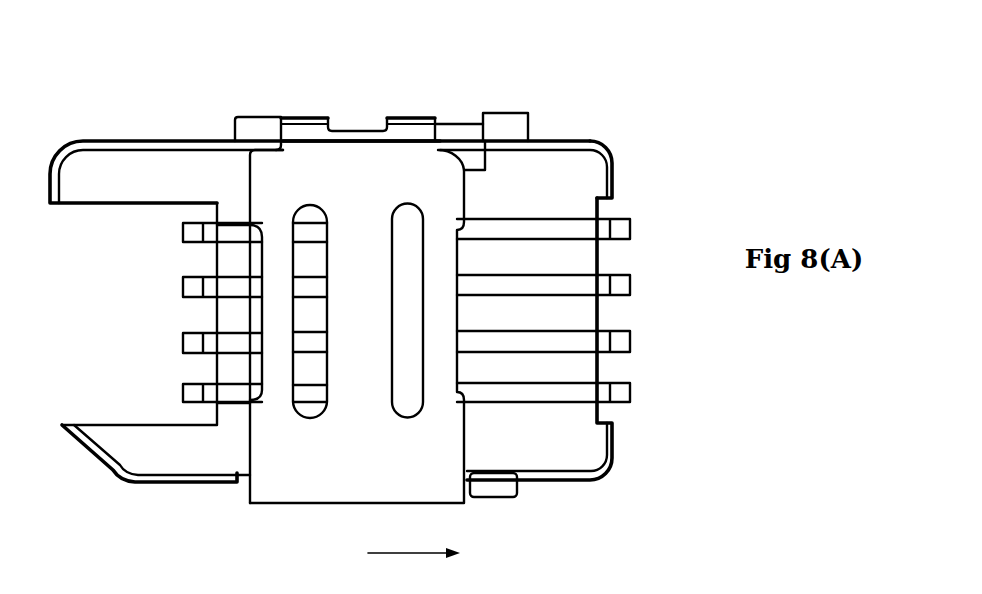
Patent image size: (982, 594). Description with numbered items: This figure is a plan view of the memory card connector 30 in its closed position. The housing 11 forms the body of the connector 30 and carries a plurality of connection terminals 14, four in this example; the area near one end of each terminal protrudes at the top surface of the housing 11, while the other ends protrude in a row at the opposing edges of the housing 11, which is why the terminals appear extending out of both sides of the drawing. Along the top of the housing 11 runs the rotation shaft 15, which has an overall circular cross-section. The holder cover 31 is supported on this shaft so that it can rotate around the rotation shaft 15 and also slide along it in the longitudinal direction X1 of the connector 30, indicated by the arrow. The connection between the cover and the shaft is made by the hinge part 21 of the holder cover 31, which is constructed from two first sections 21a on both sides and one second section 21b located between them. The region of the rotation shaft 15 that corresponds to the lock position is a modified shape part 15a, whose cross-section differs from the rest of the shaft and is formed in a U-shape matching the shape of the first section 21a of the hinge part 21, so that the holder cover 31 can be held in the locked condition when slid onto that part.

The connector 30 is at (597, 102).
The housing 11 is at (157, 141).
The holder cover 31 is at (322, 504).
The connection terminals 14 is at (183, 393).
The hinge part 21 is at (310, 118).
The first section 21a is at (292, 114).
The second section 21b is at (354, 121).
The rotation shaft 15 is at (370, 137).
The modified shape part 15a is at (455, 120).